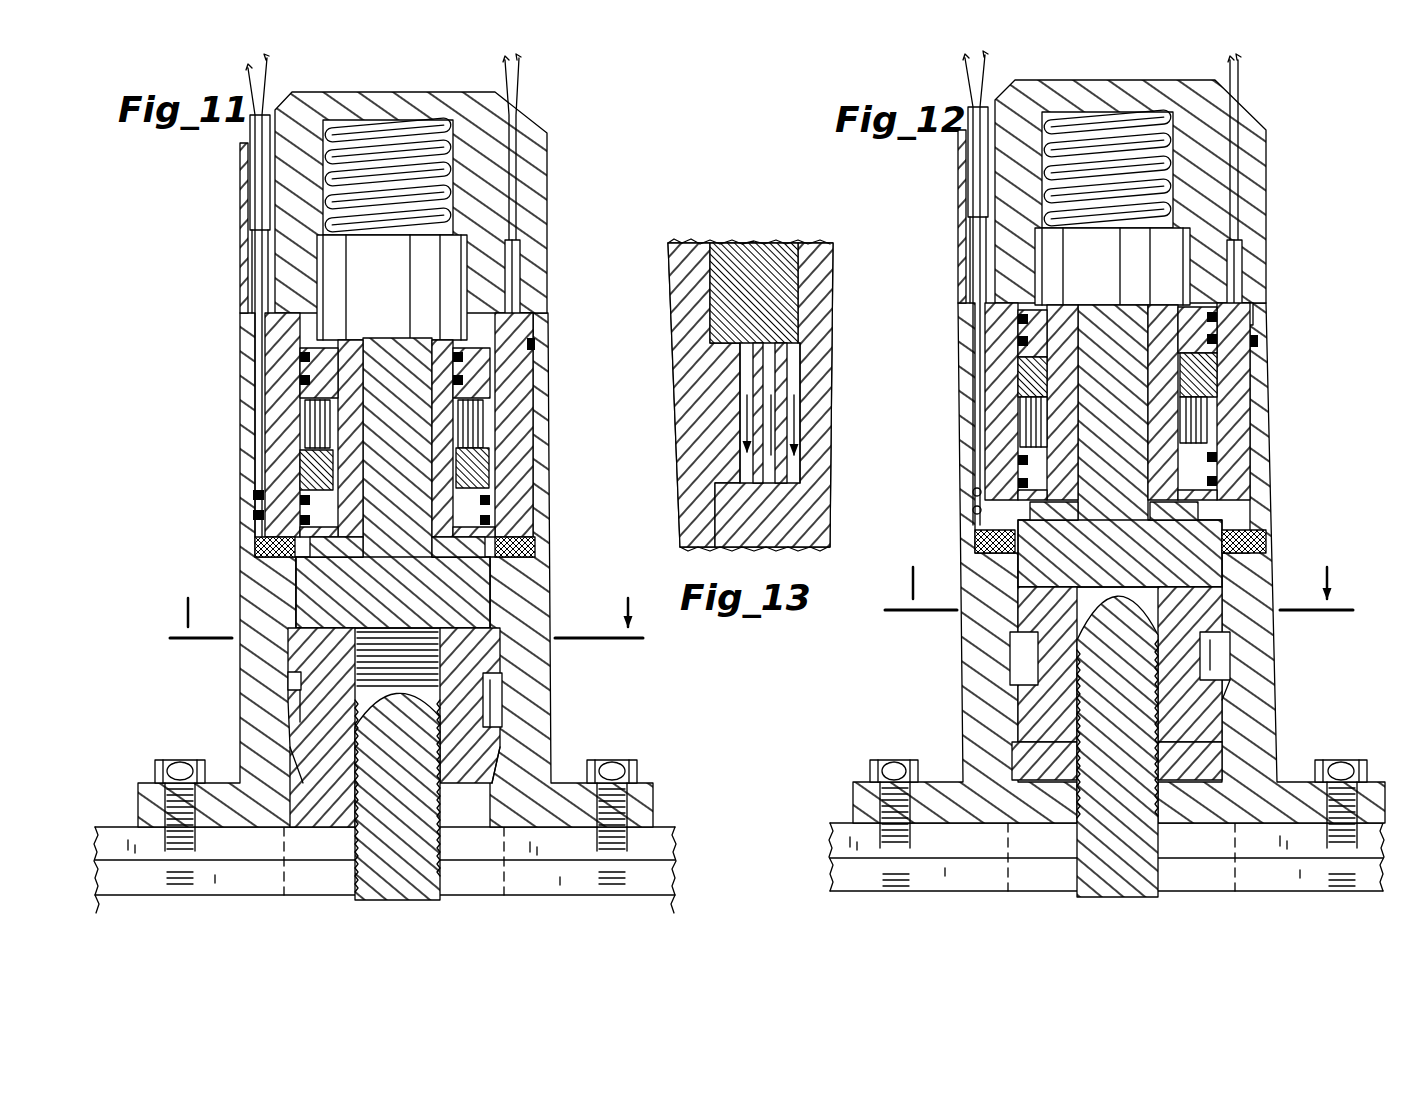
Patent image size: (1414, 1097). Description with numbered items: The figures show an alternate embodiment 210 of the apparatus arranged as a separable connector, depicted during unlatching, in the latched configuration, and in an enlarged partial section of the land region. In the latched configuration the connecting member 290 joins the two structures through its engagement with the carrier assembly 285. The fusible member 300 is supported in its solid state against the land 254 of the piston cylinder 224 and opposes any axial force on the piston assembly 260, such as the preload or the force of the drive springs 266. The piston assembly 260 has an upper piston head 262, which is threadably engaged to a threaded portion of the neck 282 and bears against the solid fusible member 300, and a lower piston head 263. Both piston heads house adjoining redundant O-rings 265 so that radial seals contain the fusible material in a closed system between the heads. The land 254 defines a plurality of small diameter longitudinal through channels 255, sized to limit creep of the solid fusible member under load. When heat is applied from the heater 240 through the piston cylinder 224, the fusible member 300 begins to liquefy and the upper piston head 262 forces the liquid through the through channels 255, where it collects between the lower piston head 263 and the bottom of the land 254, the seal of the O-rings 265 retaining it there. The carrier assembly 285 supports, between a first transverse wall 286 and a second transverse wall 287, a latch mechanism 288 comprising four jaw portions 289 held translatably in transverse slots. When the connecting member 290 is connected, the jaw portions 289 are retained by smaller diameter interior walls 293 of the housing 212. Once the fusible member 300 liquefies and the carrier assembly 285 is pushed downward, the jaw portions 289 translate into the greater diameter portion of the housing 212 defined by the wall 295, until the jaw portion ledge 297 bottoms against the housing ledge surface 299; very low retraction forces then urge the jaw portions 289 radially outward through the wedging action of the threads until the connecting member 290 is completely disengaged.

In FIG. 11, the alternate embodiment 210 is at (402, 483).
In FIG. 12, the alternate embodiment 210 is at (1096, 474).
In FIG. 12, the housing 212 is at (960, 455).
In FIG. 11, the piston cylinder 224 is at (540, 489).
In FIG. 12, the piston cylinder 224 is at (1268, 480).
In FIG. 11, the heater 240 is at (257, 500).
In FIG. 12, the heater 240 is at (982, 500).
In FIG. 11, the land 254 is at (450, 433).
In FIG. 12, the land 254 is at (1208, 428).
In FIG. 13, the land 254 is at (740, 395).
In FIG. 11, the through channels 255 is at (308, 422).
In FIG. 12, the through channels 255 is at (1026, 425).
In FIG. 13, the through channels 255 is at (745, 447).
In FIG. 11, the piston assembly 260 is at (532, 335).
In FIG. 12, the piston assembly 260 is at (1254, 338).
In FIG. 11, the upper piston head 262 is at (518, 325).
In FIG. 12, the upper piston head 262 is at (1228, 325).
In FIG. 11, the lower piston head 263 is at (478, 526).
In FIG. 12, the lower piston head 263 is at (1182, 486).
In FIG. 11, the O-rings 265 is at (302, 372).
In FIG. 12, the O-rings 265 is at (1022, 345).
In FIG. 11, the drive springs 266 is at (455, 165).
In FIG. 12, the drive springs 266 is at (1172, 160).
In FIG. 11, the neck 282 is at (452, 428).
In FIG. 12, the neck 282 is at (1152, 416).
In FIG. 11, the carrier assembly 285 is at (326, 596).
In FIG. 12, the carrier assembly 285 is at (1200, 569).
In FIG. 11, the first transverse wall 286 is at (482, 634).
In FIG. 12, the first transverse wall 286 is at (1165, 597).
In FIG. 11, the second transverse wall 287 is at (500, 755).
In FIG. 12, the second transverse wall 287 is at (1220, 740).
In FIG. 11, the latch mechanism 288 is at (314, 730).
In FIG. 12, the latch mechanism 288 is at (1040, 707).
In FIG. 11, the jaw portions 289 is at (303, 657).
In FIG. 12, the jaw portions 289 is at (1018, 618).
In FIG. 11, the connecting member 290 is at (415, 820).
In FIG. 12, the connecting member 290 is at (1093, 793).
In FIG. 11, the interior walls 293 is at (292, 752).
In FIG. 12, the interior walls 293 is at (1030, 730).
In FIG. 12, the wall 295 is at (1222, 657).
In FIG. 11, the jaw portion ledge 297 is at (492, 683).
In FIG. 12, the jaw portion ledge 297 is at (1233, 687).
In FIG. 11, the housing ledge surface 299 is at (496, 690).
In FIG. 12, the housing ledge surface 299 is at (1247, 708).
In FIG. 11, the fusible member 300 is at (303, 472).
In FIG. 12, the fusible member 300 is at (1172, 372).
In FIG. 13, the fusible member 300 is at (744, 283).